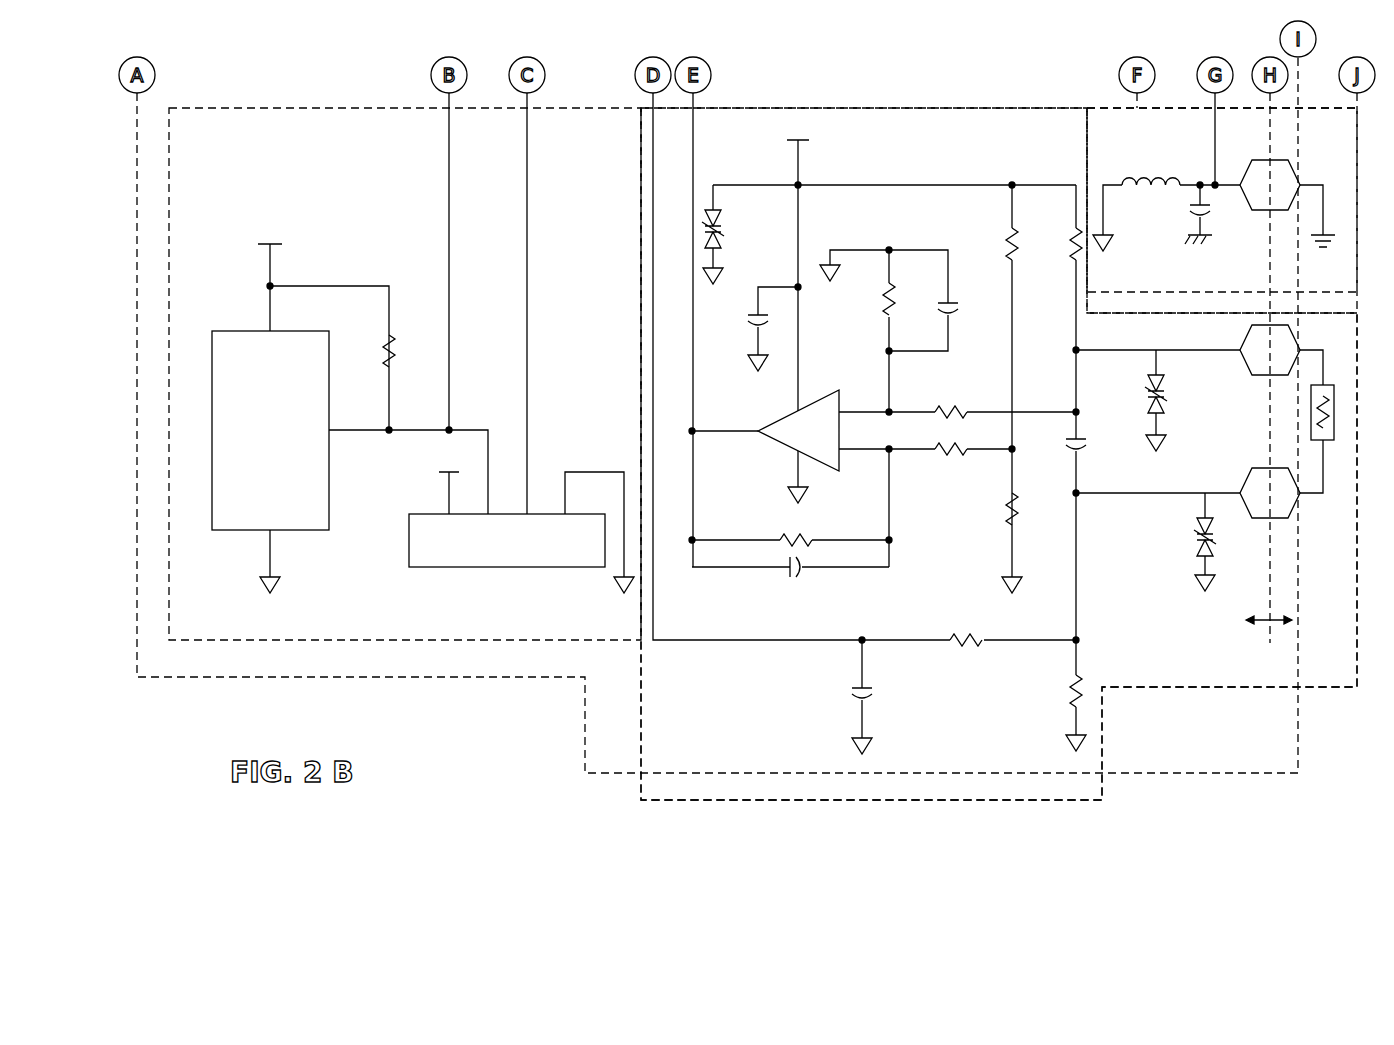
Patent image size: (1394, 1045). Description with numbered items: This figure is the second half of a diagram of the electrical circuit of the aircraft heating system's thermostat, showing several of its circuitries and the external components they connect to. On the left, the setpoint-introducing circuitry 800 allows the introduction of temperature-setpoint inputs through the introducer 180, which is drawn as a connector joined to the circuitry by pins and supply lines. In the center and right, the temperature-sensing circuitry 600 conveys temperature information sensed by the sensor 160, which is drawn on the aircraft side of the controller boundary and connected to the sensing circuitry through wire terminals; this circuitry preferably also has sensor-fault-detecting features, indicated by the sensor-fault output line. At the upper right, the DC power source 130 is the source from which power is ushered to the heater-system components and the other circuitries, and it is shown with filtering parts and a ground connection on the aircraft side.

The setpoint-introducing circuitry 800 is at (405, 366).
The introducer 180 is at (508, 521).
The temperature-sensing circuitry 600 is at (1010, 446).
The DC power source 130 is at (1222, 192).
The sensor 160 is at (1323, 421).